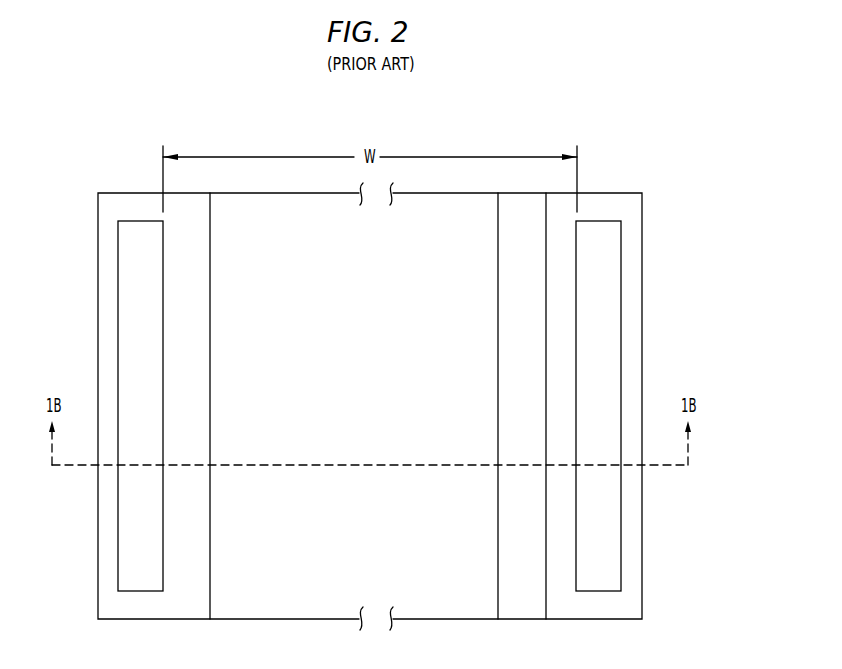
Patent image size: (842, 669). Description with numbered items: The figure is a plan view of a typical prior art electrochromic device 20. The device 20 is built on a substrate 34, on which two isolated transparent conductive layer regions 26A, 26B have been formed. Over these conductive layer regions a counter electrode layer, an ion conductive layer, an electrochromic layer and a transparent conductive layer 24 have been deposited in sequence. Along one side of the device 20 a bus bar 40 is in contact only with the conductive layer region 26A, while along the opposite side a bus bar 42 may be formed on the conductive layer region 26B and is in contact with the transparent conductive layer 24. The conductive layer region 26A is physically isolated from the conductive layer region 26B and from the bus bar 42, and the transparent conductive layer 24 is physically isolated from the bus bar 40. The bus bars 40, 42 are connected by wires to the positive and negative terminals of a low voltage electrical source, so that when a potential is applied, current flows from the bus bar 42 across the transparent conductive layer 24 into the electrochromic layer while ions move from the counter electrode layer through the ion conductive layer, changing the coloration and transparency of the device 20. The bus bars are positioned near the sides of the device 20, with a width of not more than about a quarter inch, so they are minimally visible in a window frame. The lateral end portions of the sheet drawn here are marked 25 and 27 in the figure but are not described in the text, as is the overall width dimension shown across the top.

The electrochromic device 20 is at (673, 245).
The transparent conductive layer 24 is at (445, 416).
The left end section 25 is at (98, 360).
The transparent conductive layer region 26A is at (168, 616).
The transparent conductive layer region 26B is at (589, 616).
The right end section 27 is at (642, 360).
The substrate 34 is at (529, 544).
The bus bar 40 is at (128, 325).
The bus bar 42 is at (611, 325).